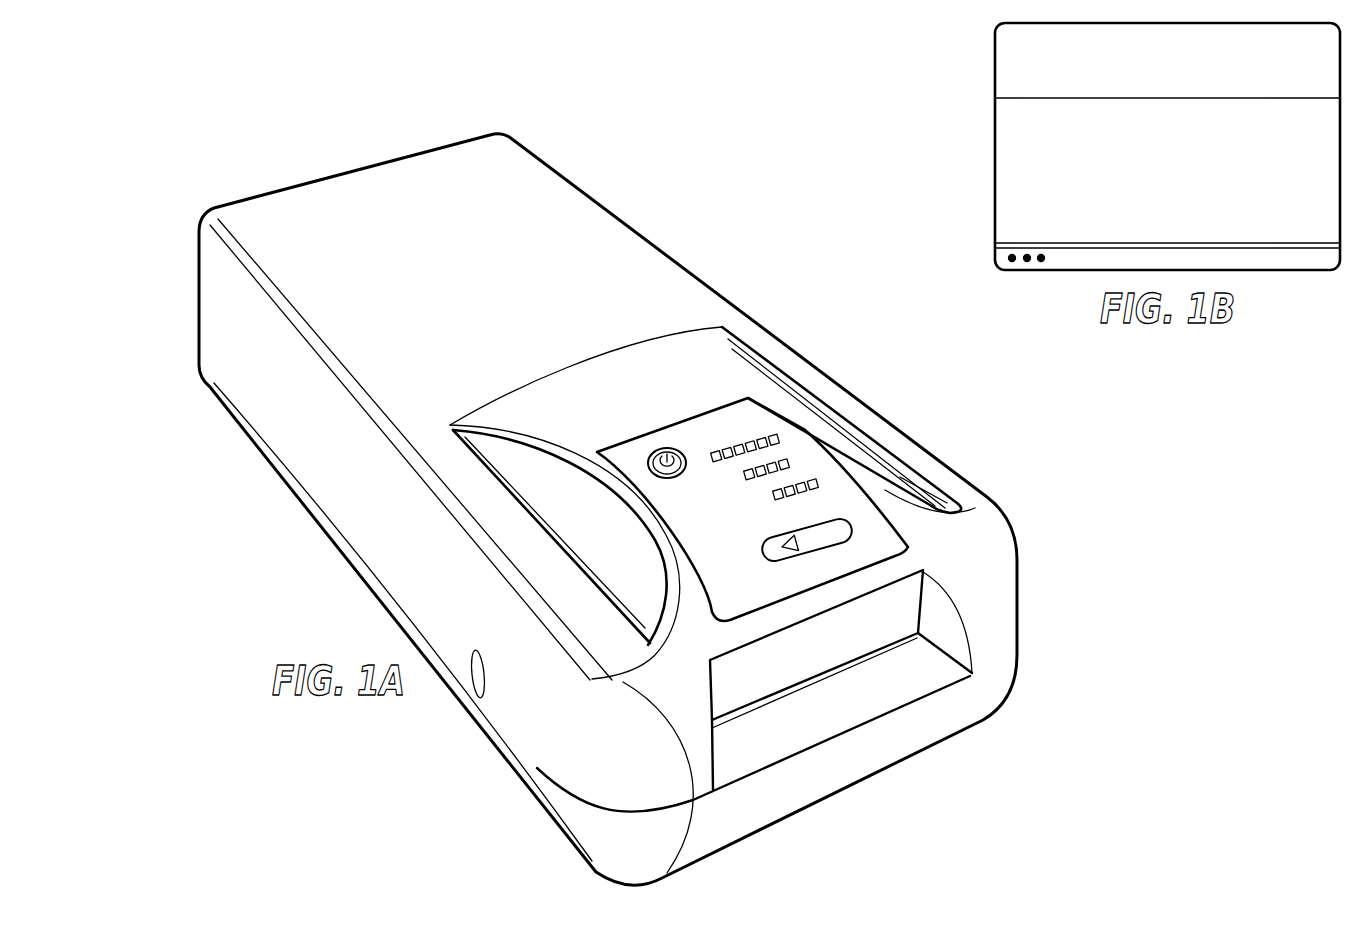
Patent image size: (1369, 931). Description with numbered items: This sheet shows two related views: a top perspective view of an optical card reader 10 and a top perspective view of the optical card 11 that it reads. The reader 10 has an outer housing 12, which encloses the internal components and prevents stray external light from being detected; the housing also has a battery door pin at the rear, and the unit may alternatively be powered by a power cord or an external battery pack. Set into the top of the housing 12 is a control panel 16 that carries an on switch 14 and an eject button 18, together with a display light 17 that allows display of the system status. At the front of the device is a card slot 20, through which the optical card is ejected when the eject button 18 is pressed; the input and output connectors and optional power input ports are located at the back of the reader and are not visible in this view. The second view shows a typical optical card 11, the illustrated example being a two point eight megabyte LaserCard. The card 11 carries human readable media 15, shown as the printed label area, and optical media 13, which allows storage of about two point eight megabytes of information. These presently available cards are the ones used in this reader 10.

In FIG. 1A, the card reader device 10 is at (540, 156).
In FIG. 1A, the outer housing 12 is at (642, 273).
In FIG. 1A, the on switch 14 is at (672, 447).
In FIG. 1A, the control panel 16 is at (835, 535).
In FIG. 1A, the display light 17 is at (810, 478).
In FIG. 1A, the eject button 18 is at (845, 500).
In FIG. 1A, the card slot 20 is at (888, 637).
In FIG. 1B, the optical memory card 11 is at (998, 246).
In FIG. 1B, the optical media 13 is at (998, 170).
In FIG. 1B, the human readable media 15 is at (998, 78).